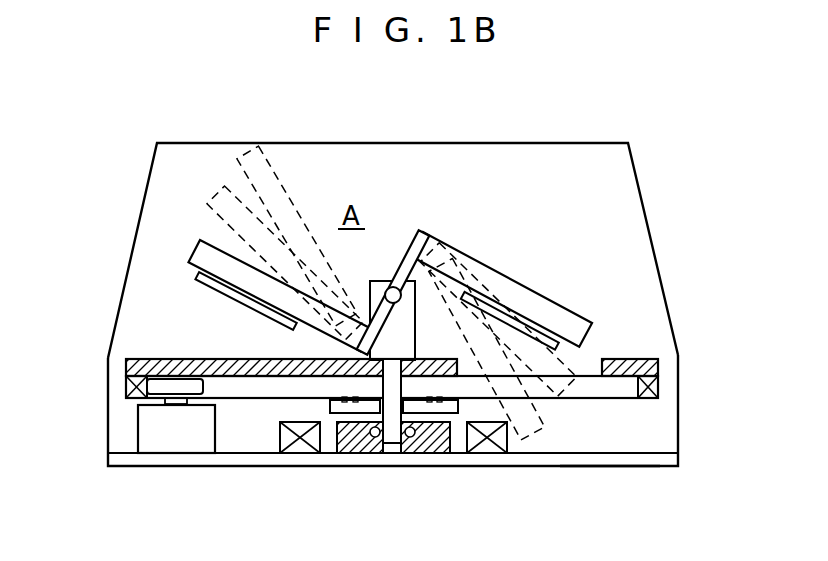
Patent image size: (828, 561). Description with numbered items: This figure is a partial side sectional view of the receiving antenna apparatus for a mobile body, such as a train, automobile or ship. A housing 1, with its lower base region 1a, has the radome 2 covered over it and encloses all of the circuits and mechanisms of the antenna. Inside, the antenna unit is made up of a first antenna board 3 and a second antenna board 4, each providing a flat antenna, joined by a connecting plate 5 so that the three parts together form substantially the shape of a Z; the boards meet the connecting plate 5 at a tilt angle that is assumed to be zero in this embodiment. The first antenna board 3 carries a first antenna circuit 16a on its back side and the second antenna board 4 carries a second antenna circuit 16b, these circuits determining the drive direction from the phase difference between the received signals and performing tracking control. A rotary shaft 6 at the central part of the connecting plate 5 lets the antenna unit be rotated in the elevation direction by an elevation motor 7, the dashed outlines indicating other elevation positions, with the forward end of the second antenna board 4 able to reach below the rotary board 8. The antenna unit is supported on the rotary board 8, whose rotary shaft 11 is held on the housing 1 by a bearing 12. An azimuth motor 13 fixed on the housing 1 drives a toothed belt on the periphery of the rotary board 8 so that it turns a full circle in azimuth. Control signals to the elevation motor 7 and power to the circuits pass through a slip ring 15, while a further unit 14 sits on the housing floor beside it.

The housing 1 is at (680, 443).
The bottom surface of base 1a is at (608, 467).
The radome 2 is at (603, 143).
The first antenna board 3 is at (197, 267).
The second antenna board 4 is at (512, 280).
The connecting plate 5 is at (409, 248).
The rotary shaft 6 is at (392, 287).
The elevation motor 7 is at (417, 335).
The rotary board 8 is at (642, 359).
The rotary shaft 11 is at (392, 445).
The bearing 12 is at (450, 436).
The azimuth motor 13 is at (660, 389).
The control circuit unit 14 is at (137, 420).
The slip ring 15 is at (330, 405).
The first antenna circuit 16a is at (239, 292).
The second antenna circuit 16b is at (562, 332).